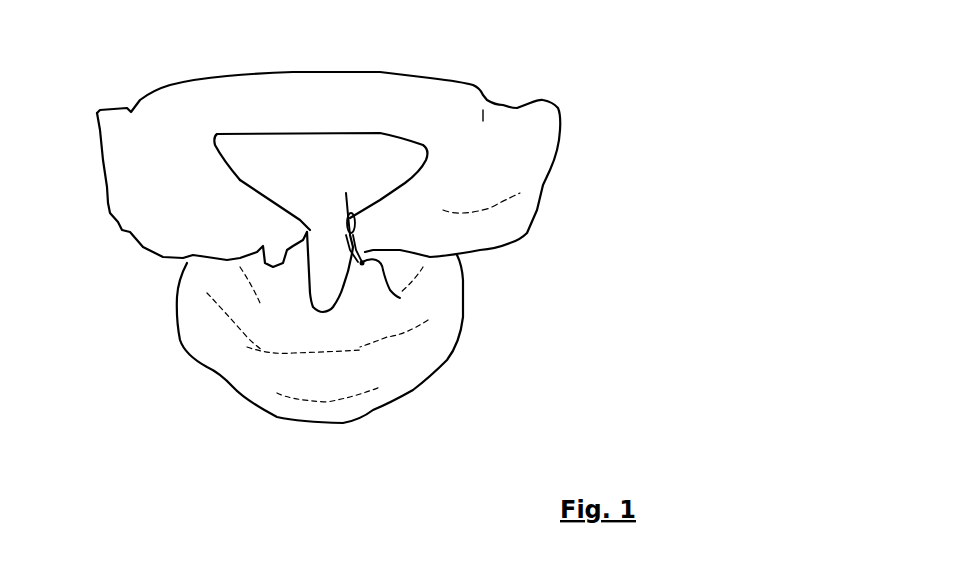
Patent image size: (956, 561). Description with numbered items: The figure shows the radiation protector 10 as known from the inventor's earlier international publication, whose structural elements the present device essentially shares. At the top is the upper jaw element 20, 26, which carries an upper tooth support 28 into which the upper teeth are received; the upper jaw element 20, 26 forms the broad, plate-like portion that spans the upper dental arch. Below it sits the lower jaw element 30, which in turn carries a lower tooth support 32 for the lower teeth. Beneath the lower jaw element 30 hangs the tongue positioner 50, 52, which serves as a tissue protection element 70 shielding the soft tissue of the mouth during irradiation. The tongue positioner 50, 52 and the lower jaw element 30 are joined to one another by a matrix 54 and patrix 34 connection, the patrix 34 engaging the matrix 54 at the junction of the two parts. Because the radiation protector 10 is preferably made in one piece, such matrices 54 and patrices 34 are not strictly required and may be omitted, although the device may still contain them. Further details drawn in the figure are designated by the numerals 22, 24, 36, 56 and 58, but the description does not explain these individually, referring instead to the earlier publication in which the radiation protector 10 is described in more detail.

The radiation protector 10 is at (547, 70).
The upper jaw element 20 is at (540, 160).
The opening / recess in upper body 22 is at (305, 147).
The seat surface 24 is at (345, 230).
The upper jaw element 26 is at (212, 97).
The upper tooth support 28 is at (131, 108).
The lower jaw element 30 is at (507, 228).
The lower tooth support 32 is at (120, 227).
The patrix 34 is at (338, 196).
The pin stem 36 is at (345, 285).
The tongue positioner 50 is at (435, 350).
The tongue positioner 52 is at (376, 385).
The matrix 54 is at (365, 275).
The pocket / slot 56 is at (312, 292).
The spring connector 58 is at (404, 293).
The tissue protection element 70 is at (379, 362).